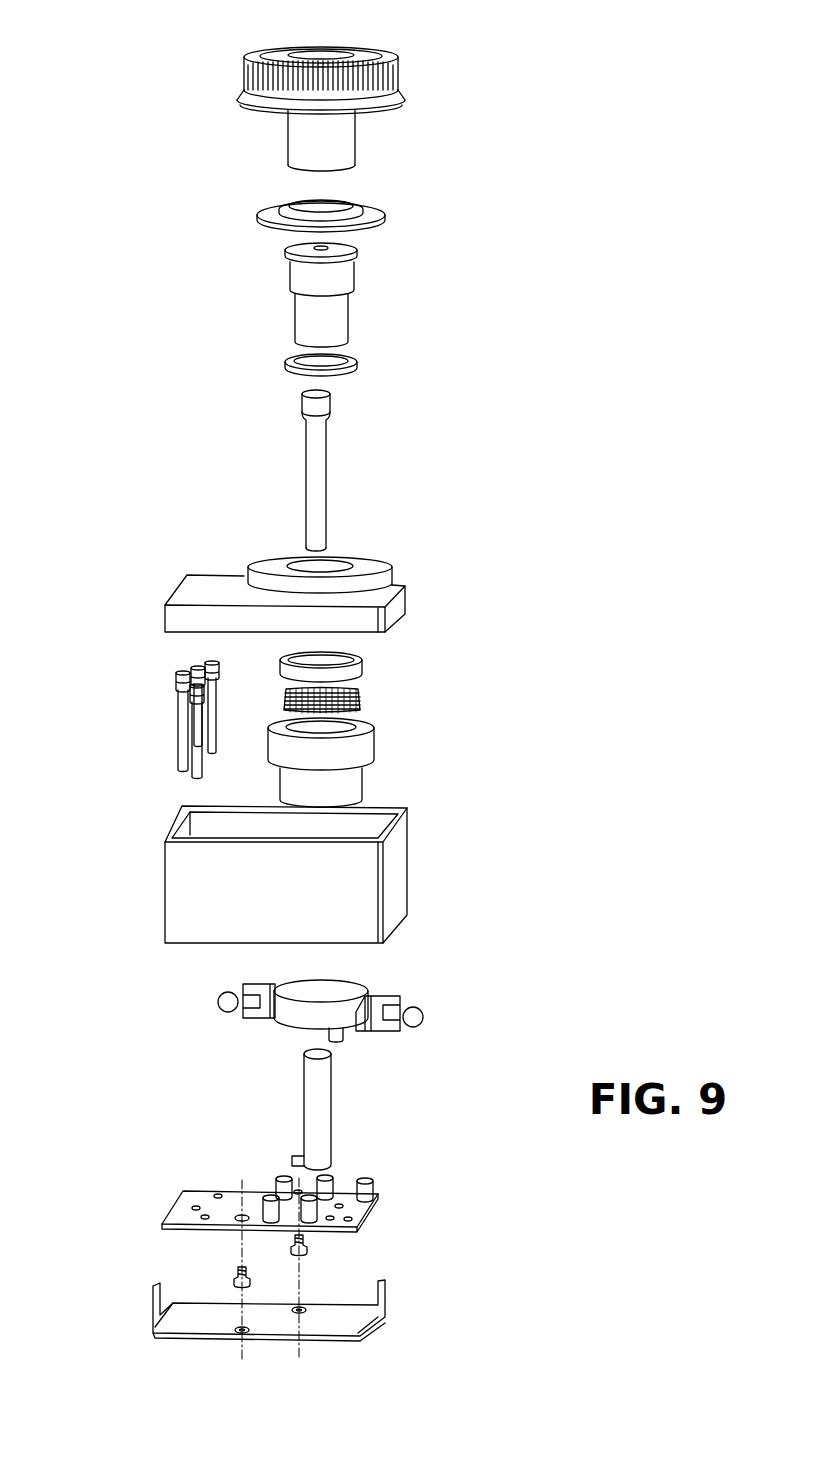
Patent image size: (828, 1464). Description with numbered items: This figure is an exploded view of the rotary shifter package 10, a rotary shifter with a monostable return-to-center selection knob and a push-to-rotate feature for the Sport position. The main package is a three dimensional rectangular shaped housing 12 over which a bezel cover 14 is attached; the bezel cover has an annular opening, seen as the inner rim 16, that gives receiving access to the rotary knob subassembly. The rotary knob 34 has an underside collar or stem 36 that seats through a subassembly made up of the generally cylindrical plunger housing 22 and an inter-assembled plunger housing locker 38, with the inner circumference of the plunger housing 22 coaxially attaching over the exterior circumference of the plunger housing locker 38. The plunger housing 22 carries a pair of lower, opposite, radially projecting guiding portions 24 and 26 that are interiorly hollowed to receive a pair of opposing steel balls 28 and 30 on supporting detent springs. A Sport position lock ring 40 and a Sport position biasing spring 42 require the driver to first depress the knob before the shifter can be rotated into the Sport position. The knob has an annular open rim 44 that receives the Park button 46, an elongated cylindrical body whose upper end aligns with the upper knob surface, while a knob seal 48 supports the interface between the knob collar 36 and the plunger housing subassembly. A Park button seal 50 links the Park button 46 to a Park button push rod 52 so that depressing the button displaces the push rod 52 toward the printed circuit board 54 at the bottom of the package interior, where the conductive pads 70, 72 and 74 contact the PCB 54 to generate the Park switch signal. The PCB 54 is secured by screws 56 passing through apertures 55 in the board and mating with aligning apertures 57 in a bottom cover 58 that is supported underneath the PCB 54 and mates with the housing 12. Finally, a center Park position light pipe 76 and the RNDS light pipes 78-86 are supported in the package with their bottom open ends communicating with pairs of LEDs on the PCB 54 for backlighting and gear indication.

The rotary shifter package 10 is at (640, 117).
The housing 12 is at (170, 888).
The bezel cover 14 is at (272, 560).
The inner rim 16 is at (340, 558).
The plunger housing 22 is at (320, 986).
The guiding portion 24 is at (270, 1020).
The guiding portion 26 is at (378, 1000).
The steel ball 28 is at (218, 1004).
The steel ball 30 is at (424, 1017).
The rotary knob 34 is at (400, 80).
The stem 36 is at (350, 134).
The plunger housing locker 38 is at (373, 752).
The Sport position lock ring 40 is at (365, 662).
The Sport position biasing spring 42 is at (362, 700).
The annular open rim 44 is at (302, 50).
The Park button 46 is at (324, 54).
The knob seal 48 is at (268, 215).
The Park button seal 50 is at (292, 365).
The Park button push rod 52 is at (310, 1122).
The printed circuit board 54 is at (172, 1208).
The aperture 55 is at (296, 1190).
The screw 56 is at (250, 1275).
The aperture 57 is at (240, 1333).
The bottom cover 58 is at (152, 1290).
The conductive pad 70 is at (374, 1192).
The conductive pad 72 is at (331, 1186).
The conductive pad 74 is at (276, 1190).
The center Park position light pipe 76 is at (320, 446).
The RNDS light pipes 78-86 is at (182, 722).